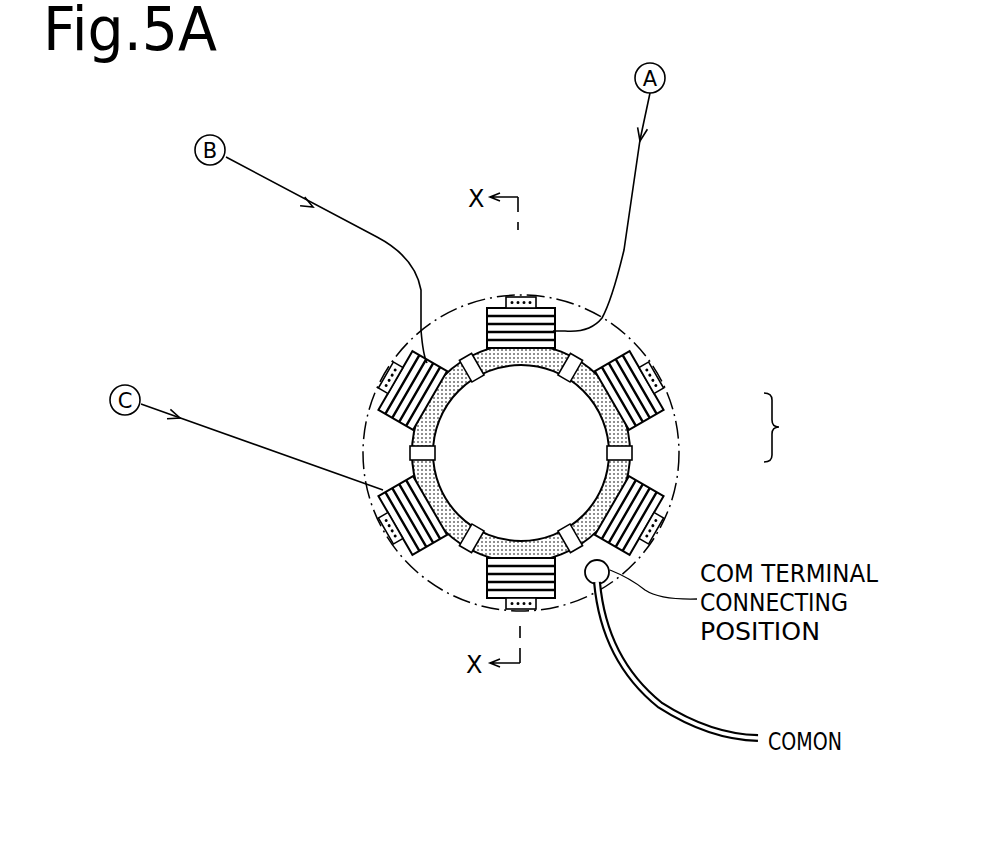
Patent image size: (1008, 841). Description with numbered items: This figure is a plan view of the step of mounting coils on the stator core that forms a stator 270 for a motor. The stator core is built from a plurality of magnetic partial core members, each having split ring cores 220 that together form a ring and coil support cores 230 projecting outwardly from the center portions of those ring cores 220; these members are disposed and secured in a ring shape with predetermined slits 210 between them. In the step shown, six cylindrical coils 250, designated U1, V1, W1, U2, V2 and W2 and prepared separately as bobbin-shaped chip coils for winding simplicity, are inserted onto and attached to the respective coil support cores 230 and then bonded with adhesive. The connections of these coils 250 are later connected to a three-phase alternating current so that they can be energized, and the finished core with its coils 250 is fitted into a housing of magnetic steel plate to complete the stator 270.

The slit 210 is at (440, 558).
The split ring core 220 is at (630, 441).
The coil support core 230 is at (664, 384).
The coil 250 is at (368, 329).
The stator 270 is at (796, 427).